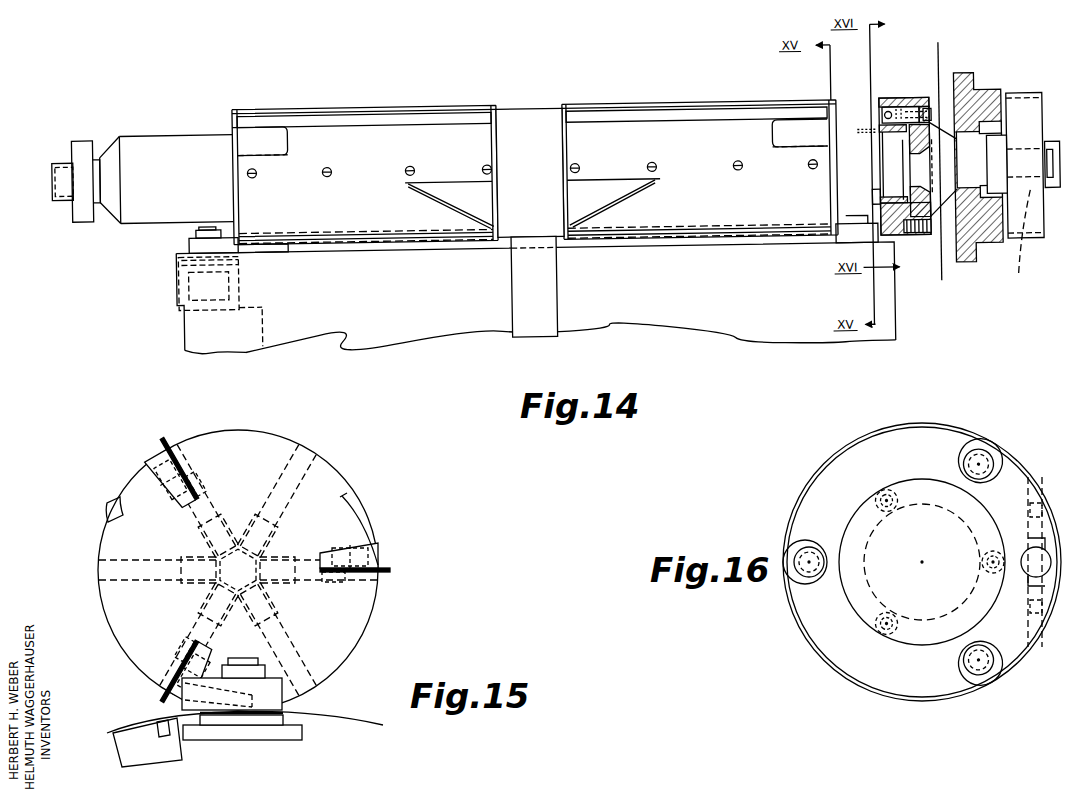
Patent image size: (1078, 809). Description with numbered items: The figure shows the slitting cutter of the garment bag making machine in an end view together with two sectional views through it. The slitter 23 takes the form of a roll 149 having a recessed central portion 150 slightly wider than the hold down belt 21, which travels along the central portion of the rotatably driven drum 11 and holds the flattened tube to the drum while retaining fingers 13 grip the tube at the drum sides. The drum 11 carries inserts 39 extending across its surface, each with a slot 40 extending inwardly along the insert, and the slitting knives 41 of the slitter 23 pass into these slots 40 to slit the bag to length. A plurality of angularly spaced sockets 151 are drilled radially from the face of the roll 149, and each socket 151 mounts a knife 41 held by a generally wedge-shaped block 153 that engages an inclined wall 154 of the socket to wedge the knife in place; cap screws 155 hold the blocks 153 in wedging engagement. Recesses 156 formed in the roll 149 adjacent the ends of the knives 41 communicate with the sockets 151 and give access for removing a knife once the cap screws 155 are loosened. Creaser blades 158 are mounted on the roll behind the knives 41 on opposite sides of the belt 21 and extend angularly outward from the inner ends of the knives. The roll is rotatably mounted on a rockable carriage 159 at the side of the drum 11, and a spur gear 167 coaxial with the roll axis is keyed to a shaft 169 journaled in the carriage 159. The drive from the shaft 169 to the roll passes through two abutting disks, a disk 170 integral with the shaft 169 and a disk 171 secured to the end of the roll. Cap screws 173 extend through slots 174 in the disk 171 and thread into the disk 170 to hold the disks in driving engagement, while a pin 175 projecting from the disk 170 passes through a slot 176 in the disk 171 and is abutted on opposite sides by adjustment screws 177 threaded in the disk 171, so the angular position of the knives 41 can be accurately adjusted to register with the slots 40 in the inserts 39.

In FIG. 14, the drum 11 is at (716, 320).
In FIG. 15, the drum 11 is at (347, 717).
In FIG. 14, the retaining fingers 13 is at (265, 240).
In FIG. 15, the retaining fingers 13 is at (185, 703).
In FIG. 14, the endless belt 21 is at (525, 290).
In FIG. 14, the slitter 23 is at (731, 105).
In FIG. 15, the inserts 39 is at (125, 732).
In FIG. 15, the slots 40 is at (160, 715).
In FIG. 14, the slitting knives 41 is at (343, 116).
In FIG. 15, the slitting knives 41 is at (166, 440).
In FIG. 14, the roll 149 is at (444, 105).
In FIG. 15, the roll 149 is at (325, 470).
In FIG. 14, the recessed central portion 150 is at (540, 109).
In FIG. 15, the sockets 151 is at (208, 512).
In FIG. 15, the block 153 is at (185, 490).
In FIG. 15, the inclined walls 154 is at (165, 492).
In FIG. 15, the cap screws 155 is at (150, 460).
In FIG. 14, the recesses 156 is at (243, 138).
In FIG. 15, the recesses 156 is at (100, 495).
In FIG. 14, the creaser blades 158 is at (460, 206).
In FIG. 14, the carriage 159 is at (960, 80).
In FIG. 14, the spur gear 167 is at (1024, 101).
In FIG. 14, the shaft 169 is at (1017, 241).
In FIG. 14, the disk 170 is at (922, 113).
In FIG. 14, the disk 171 is at (892, 104).
In FIG. 16, the disk 171 is at (927, 427).
In FIG. 16, the cap screws 173 is at (983, 451).
In FIG. 16, the slots 174 is at (963, 450).
In FIG. 16, the pin 175 is at (1028, 562).
In FIG. 16, the slot 176 is at (1027, 542).
In FIG. 16, the adjustment screws 177 is at (1032, 537).